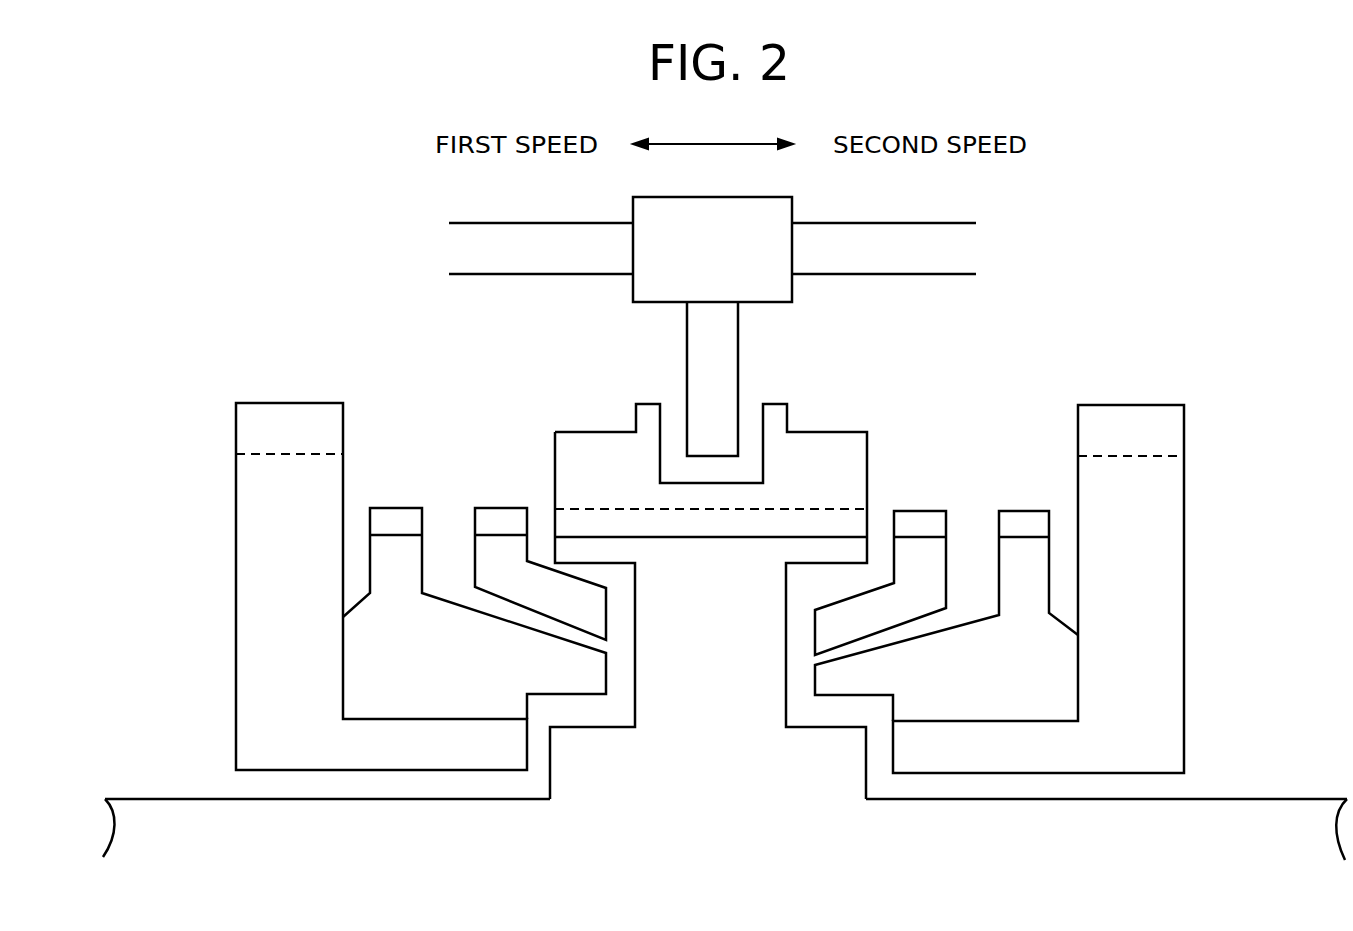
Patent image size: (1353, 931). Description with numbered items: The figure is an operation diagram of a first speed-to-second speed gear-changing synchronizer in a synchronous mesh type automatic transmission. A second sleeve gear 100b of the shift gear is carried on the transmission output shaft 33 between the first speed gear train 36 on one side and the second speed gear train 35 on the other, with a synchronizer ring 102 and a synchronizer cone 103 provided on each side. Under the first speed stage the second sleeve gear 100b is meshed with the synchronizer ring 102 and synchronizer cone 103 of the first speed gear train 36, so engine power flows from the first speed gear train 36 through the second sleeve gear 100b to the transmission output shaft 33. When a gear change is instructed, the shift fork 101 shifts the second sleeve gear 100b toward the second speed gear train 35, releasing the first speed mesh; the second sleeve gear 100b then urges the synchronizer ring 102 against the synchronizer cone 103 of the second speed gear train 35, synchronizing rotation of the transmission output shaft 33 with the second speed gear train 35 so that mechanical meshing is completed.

The transmission output shaft 33 is at (1253, 799).
The second speed gear train 35 is at (1132, 405).
The first speed gear train 36 is at (292, 403).
The second sleeve gear 100b is at (850, 432).
The shift fork 101 is at (738, 332).
The synchronizer ring 102 is at (503, 508).
The synchronizer cone 103 is at (400, 508).